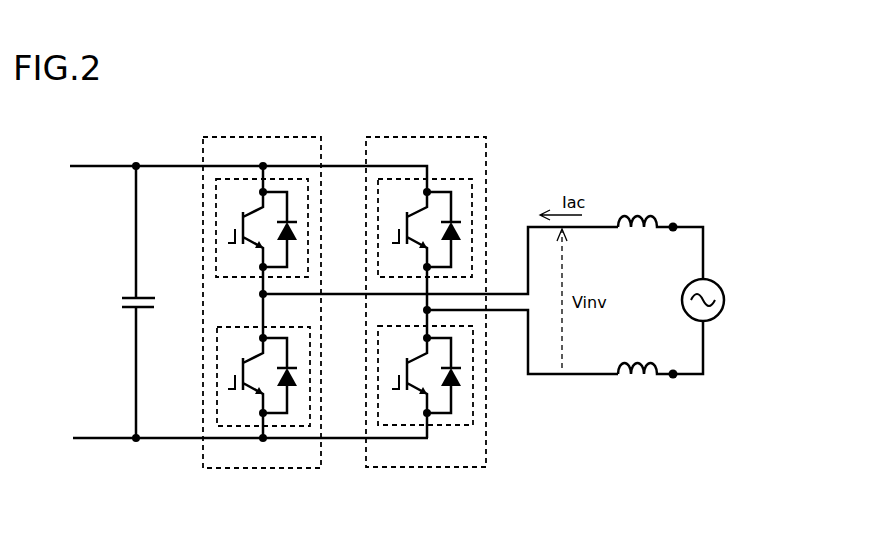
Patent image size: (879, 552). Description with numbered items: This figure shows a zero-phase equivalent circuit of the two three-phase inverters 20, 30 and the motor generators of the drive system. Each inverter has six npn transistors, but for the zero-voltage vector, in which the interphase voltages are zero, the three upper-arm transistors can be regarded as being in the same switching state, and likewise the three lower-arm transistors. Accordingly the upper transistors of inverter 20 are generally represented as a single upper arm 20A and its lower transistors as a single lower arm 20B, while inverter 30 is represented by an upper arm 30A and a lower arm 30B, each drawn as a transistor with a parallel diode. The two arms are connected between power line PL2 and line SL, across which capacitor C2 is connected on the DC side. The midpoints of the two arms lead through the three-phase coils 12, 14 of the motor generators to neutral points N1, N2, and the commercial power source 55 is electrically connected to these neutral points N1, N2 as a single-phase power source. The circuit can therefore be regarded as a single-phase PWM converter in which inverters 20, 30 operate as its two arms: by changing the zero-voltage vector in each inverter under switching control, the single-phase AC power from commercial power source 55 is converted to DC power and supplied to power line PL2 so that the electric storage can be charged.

The three-phase coil 12 is at (641, 196).
The three-phase coil 14 is at (643, 395).
The inverter 20 is at (262, 304).
The upper arm 20A is at (287, 179).
The lower arm 20B is at (242, 427).
The inverter 30 is at (426, 303).
The upper arm 30A is at (450, 179).
The lower arm 30B is at (448, 426).
The commercial power source 55 is at (718, 277).
The capacitor C2 is at (152, 291).
The power line PL2 is at (100, 165).
The line SL is at (103, 442).
The neutral point N1 is at (676, 222).
The neutral point N2 is at (676, 378).